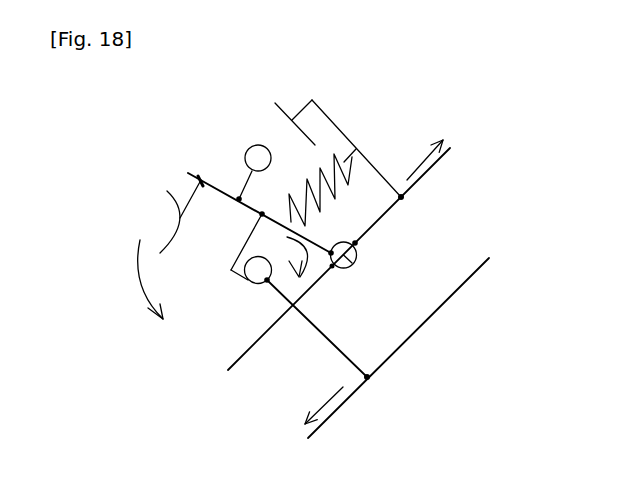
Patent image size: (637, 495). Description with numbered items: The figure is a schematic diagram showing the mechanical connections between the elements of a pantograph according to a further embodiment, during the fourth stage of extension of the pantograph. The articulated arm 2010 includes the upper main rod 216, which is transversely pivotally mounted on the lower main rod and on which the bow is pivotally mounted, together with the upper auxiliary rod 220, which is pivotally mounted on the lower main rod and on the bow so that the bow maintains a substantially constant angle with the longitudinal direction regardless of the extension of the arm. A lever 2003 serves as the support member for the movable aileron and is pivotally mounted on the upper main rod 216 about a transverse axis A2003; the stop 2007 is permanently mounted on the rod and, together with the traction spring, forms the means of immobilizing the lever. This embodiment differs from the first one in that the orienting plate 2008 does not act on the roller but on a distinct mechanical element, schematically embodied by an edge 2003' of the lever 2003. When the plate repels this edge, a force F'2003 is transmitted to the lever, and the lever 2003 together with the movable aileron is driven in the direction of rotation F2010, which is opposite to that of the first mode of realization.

The lever 2003 is at (261, 167).
The edge of the lever 2003' is at (226, 284).
The stop 2007 is at (282, 104).
The articulated arm 2010 is at (154, 200).
The direction of rotation F2010 is at (111, 279).
The upper main rod 216 is at (428, 177).
The upper auxiliary rod 220 is at (480, 268).
The orienting plate 2008 is at (328, 343).
The roller contact point A2003 is at (363, 267).
The reaction force F'2003 is at (351, 277).